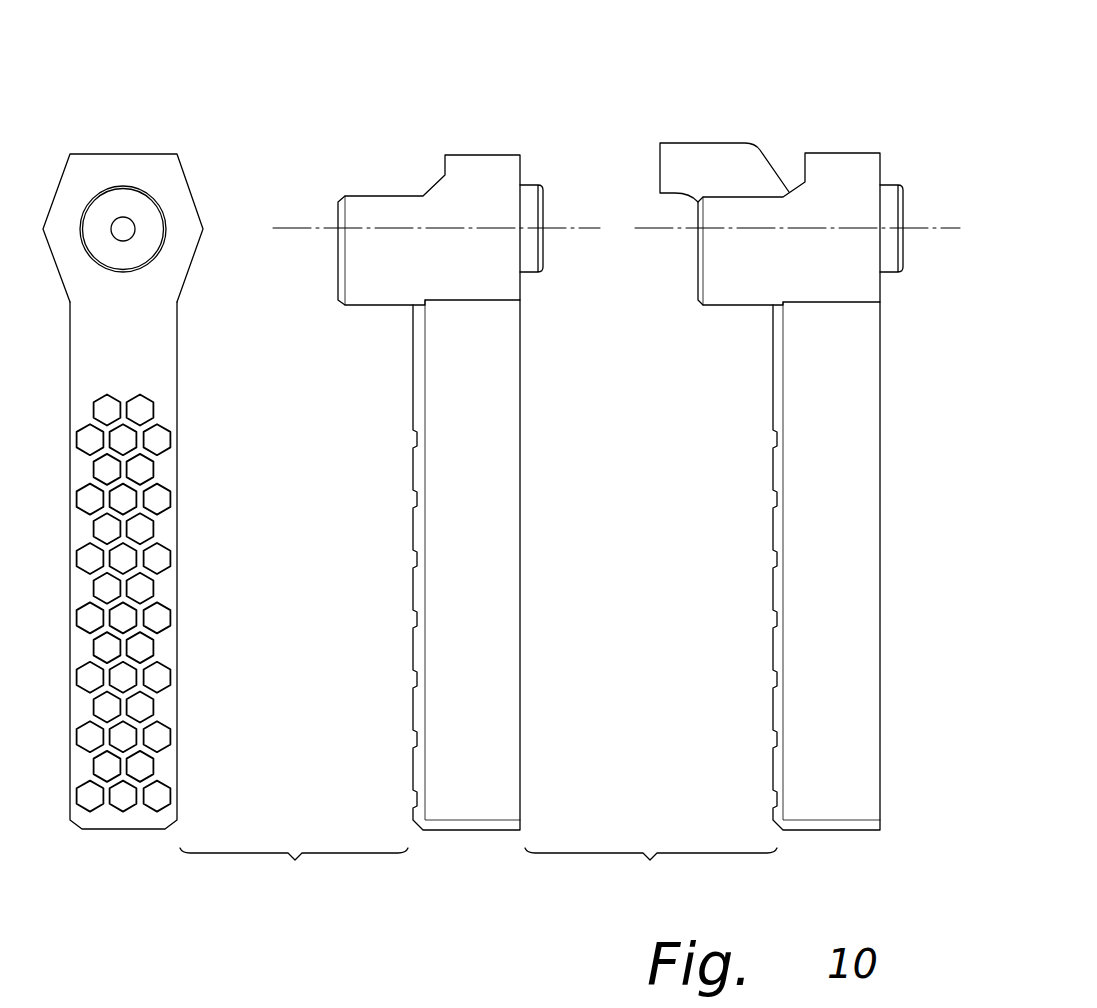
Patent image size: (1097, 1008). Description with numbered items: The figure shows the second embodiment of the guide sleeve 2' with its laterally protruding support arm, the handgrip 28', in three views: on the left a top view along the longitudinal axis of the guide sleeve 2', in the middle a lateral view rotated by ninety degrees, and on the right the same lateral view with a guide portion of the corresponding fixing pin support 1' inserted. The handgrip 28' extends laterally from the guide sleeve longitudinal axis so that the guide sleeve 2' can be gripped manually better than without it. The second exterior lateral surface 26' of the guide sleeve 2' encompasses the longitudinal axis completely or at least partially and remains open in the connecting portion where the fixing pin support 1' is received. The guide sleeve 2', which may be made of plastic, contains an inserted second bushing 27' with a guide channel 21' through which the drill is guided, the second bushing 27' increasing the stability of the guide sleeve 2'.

The fixing pin support 1' is at (484, 524).
The guide sleeve 2' is at (500, 419).
The guide channel 21' is at (191, 261).
The second exterior lateral surface 26' is at (465, 219).
The second bushing 27' is at (518, 169).
The handgrip 28' is at (475, 565).